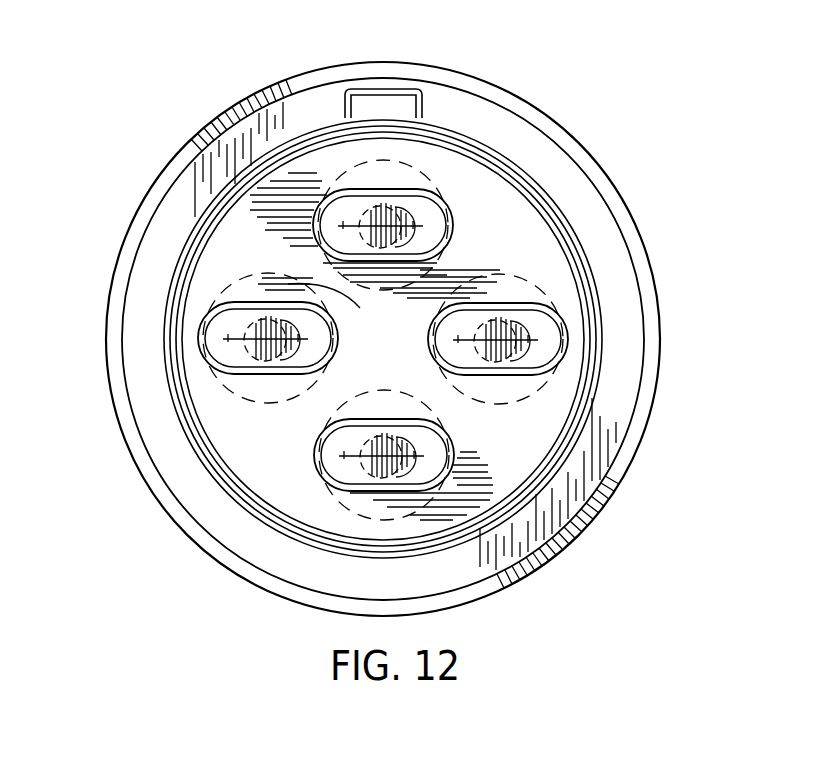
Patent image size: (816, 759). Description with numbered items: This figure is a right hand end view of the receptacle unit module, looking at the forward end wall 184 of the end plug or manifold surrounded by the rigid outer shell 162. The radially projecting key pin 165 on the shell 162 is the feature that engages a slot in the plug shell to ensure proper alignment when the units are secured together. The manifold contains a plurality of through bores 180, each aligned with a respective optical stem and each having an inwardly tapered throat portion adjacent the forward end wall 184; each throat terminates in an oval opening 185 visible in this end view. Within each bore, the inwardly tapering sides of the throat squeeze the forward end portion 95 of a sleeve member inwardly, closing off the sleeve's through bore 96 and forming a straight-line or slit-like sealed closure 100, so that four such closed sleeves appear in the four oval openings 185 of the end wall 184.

The outer shell 162 is at (138, 213).
The key pin 165 is at (397, 103).
The forward end wall 184 is at (548, 415).
The oval opening 185 is at (385, 420).
The forward end portion 95 is at (445, 338).
The through bore 96 is at (263, 318).
The sealed closure 100 is at (470, 338).
The through bores 180 is at (330, 417).